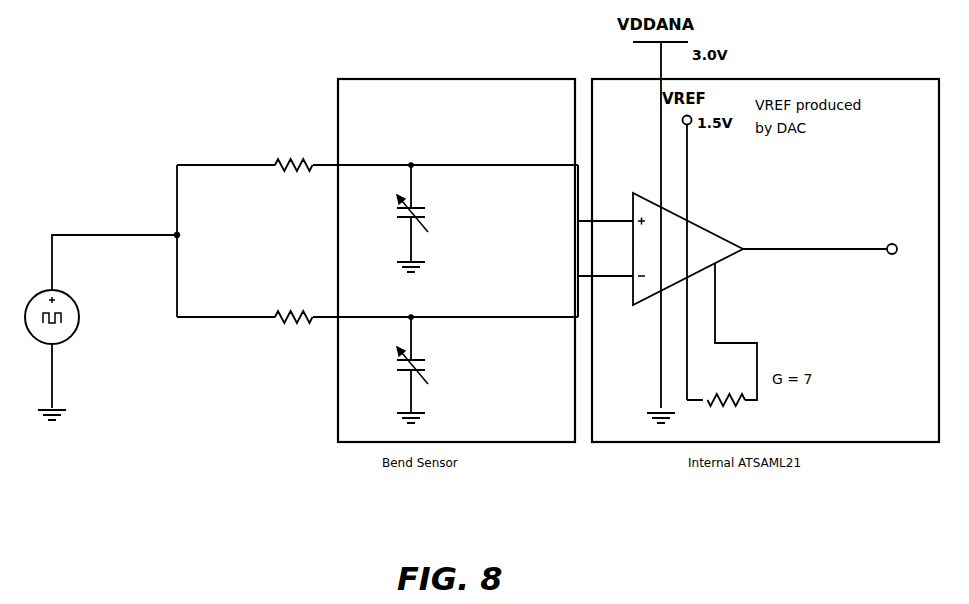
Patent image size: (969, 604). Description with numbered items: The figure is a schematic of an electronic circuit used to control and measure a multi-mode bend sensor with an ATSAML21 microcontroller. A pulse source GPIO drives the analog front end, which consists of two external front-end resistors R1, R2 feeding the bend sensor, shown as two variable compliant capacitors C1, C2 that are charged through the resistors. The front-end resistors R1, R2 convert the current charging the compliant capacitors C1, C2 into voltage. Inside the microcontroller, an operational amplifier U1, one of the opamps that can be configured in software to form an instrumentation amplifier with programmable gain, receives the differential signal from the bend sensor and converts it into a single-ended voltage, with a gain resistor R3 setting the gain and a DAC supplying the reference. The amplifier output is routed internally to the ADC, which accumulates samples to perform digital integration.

The front-end resistor R1 is at (377, 161).
The front-end resistor R2 is at (377, 313).
The gain resistor R3 16.66k ohm R3 is at (720, 347).
The bend sensor variable capacitor C1 700pF C1 is at (440, 217).
The bend sensor variable capacitor C2 700pF C2 is at (440, 369).
The operational amplifier U1 is at (751, 238).
The GPIO pulse source GPIO is at (102, 327).